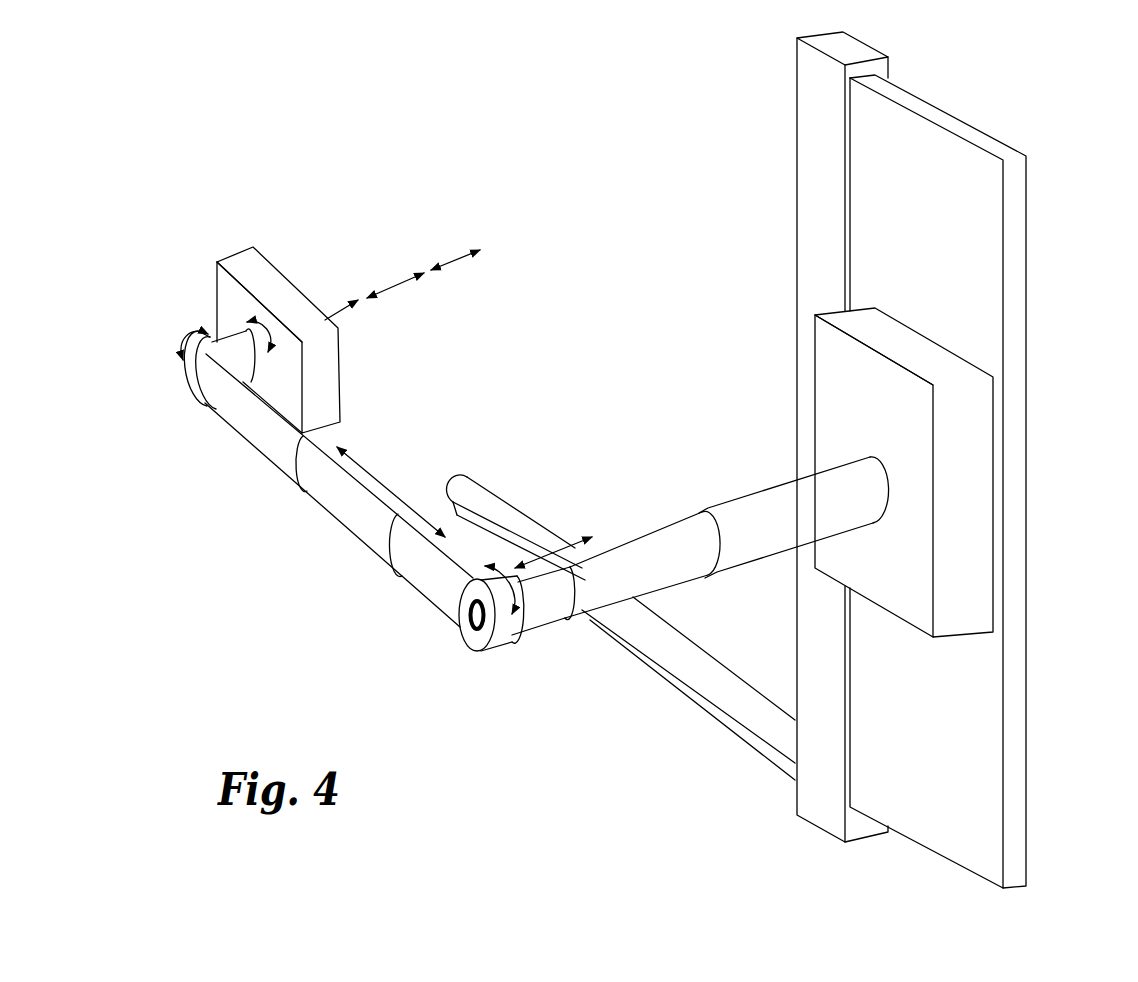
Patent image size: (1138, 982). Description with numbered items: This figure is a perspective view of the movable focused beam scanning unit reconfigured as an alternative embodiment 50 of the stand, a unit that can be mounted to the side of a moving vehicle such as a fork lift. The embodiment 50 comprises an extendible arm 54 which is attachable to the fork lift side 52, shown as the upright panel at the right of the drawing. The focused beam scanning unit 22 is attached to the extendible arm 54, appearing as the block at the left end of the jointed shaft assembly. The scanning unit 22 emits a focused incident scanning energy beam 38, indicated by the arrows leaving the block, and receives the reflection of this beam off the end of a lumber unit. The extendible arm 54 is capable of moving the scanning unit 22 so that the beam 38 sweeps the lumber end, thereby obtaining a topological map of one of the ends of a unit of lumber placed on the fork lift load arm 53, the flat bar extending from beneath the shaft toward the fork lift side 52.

The focused beam scanning unit 22 is at (232, 258).
The focused incident scanning energy beam 38 is at (432, 268).
The alternative embodiment of the stand 50 is at (240, 626).
The fork lift side 52 is at (1020, 302).
The fork lift load arm 53 is at (663, 650).
The extendible arm 54 is at (980, 448).